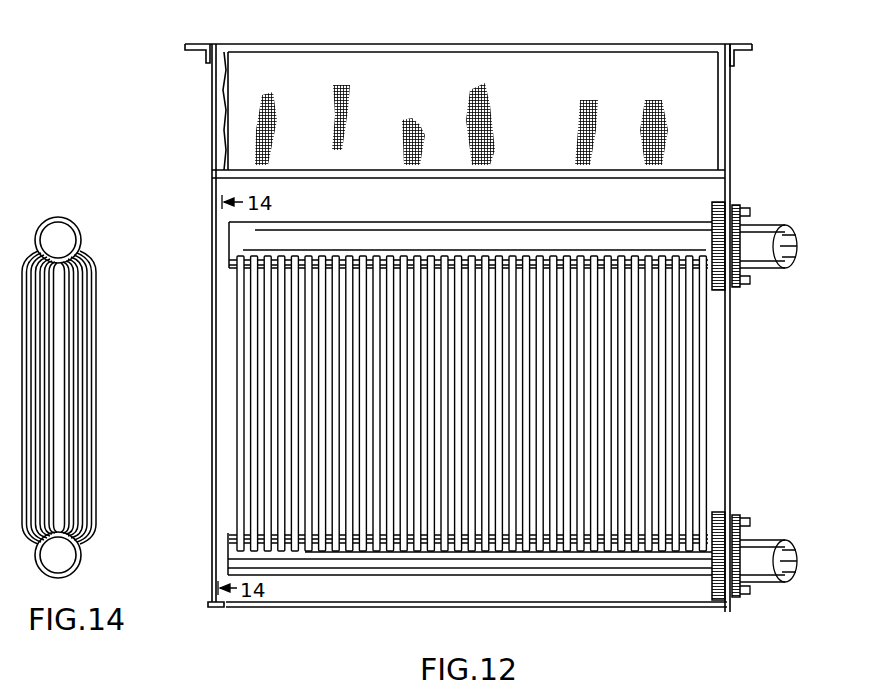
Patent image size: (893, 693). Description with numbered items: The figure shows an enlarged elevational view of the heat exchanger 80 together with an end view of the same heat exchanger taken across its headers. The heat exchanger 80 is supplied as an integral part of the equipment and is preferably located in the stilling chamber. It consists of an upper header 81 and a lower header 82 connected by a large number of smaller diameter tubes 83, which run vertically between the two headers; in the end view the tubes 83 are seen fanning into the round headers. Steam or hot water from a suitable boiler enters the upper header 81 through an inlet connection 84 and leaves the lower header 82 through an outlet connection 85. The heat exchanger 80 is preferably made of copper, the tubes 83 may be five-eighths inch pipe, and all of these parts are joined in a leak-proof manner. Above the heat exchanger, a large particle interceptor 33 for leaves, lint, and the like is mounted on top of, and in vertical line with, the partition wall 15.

In FIG. 12, the partition wall 15 is at (733, 133).
In FIG. 12, the large particle interceptor 33 is at (648, 62).
In FIG. 12, the heat exchanger 80 is at (516, 415).
In FIG. 12, the upper header 81 is at (413, 240).
In FIG. 14, the upper header 81 is at (79, 229).
In FIG. 12, the lower header 82 is at (380, 560).
In FIG. 14, the lower header 82 is at (83, 565).
In FIG. 12, the tubes 83 is at (672, 440).
In FIG. 14, the tubes 83 is at (66, 350).
In FIG. 12, the inlet connection 84 is at (765, 242).
In FIG. 12, the outlet connection 85 is at (765, 565).